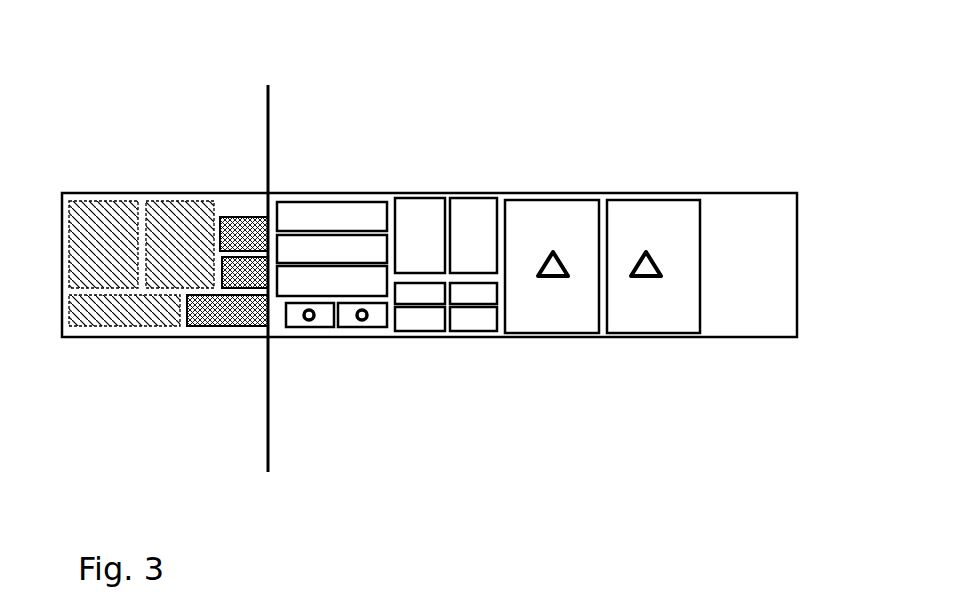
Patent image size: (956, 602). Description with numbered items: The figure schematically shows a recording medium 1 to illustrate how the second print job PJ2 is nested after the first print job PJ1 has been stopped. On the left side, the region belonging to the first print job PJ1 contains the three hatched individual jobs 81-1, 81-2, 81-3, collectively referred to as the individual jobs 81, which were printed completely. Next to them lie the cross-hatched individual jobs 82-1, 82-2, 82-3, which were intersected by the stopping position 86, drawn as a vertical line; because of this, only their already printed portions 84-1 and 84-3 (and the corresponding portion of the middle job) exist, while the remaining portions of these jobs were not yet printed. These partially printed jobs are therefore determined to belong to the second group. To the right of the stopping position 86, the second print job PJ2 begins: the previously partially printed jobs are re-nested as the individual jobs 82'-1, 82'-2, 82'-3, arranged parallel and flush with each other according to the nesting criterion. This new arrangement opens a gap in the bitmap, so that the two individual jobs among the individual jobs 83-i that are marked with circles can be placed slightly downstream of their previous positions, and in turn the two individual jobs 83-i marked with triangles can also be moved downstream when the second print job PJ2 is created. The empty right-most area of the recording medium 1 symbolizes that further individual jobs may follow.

The recording medium 1 is at (767, 193).
The individual jobs of the first group 81 is at (133, 259).
The individual job 81-1 is at (90, 237).
The individual job 81-2 is at (82, 318).
The individual job 81-3 is at (179, 232).
The individual job 82-1 is at (237, 158).
The already printed portion 84-1 is at (242, 243).
The individual job 82-2 is at (242, 273).
The individual job 82-3 is at (203, 360).
The already printed portion 84-3 is at (210, 308).
The re-nested individual job 82'-1 is at (332, 174).
The re-nested individual job 82'-2 is at (346, 327).
The re-nested individual job 82'-3 is at (332, 343).
The individual jobs 83-i is at (397, 185).
The stopping position 86 is at (268, 448).
The first print job PJ1 is at (178, 95).
The second print job PJ2 is at (390, 97).